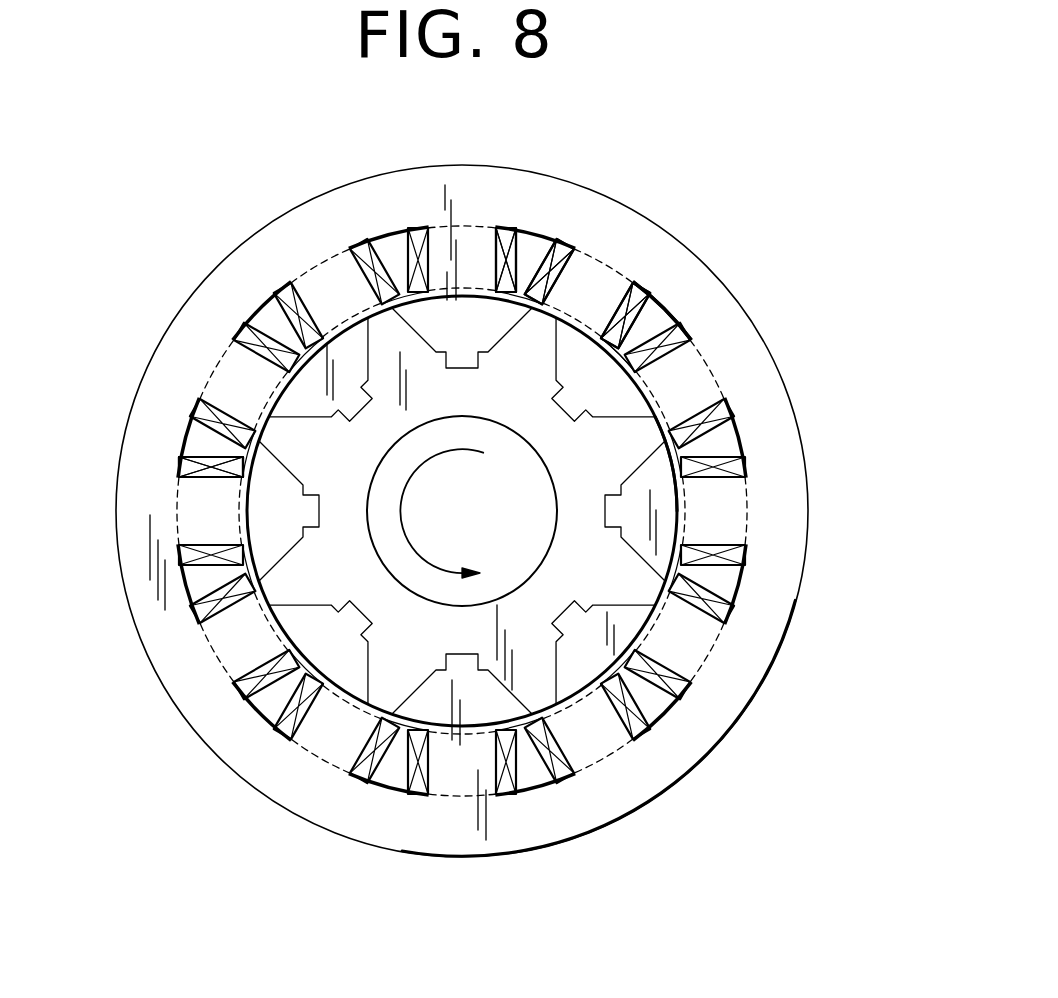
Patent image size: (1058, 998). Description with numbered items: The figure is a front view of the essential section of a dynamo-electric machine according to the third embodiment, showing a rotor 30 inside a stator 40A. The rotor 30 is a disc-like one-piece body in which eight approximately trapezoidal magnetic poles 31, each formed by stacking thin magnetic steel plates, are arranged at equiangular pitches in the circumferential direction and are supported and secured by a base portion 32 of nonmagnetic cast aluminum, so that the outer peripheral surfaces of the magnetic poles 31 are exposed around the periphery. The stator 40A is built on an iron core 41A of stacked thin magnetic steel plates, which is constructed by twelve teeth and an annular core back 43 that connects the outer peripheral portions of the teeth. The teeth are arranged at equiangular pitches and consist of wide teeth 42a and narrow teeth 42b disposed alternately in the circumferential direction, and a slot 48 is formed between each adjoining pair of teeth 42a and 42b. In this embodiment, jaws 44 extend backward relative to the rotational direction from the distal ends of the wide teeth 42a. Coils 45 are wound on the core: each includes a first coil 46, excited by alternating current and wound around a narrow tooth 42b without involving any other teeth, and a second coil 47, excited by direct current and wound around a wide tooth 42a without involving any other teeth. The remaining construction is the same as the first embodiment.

The stator 40A is at (200, 282).
The rotor 30 is at (876, 344).
The magnetic poles 31 is at (588, 420).
The base portion 32 is at (620, 480).
The iron core 41A is at (806, 597).
The wide teeth 42a is at (595, 278).
The narrow teeth 42b is at (692, 360).
The core back 43 is at (778, 492).
The jaws 44 is at (597, 330).
The coils 45 is at (178, 462).
The first coil 46 is at (635, 398).
The second coil 47 is at (562, 243).
The slot 48 is at (522, 245).